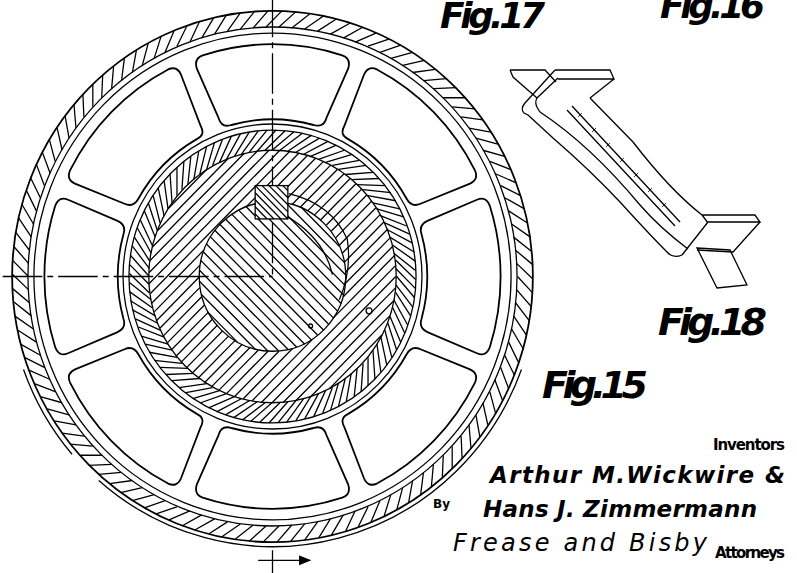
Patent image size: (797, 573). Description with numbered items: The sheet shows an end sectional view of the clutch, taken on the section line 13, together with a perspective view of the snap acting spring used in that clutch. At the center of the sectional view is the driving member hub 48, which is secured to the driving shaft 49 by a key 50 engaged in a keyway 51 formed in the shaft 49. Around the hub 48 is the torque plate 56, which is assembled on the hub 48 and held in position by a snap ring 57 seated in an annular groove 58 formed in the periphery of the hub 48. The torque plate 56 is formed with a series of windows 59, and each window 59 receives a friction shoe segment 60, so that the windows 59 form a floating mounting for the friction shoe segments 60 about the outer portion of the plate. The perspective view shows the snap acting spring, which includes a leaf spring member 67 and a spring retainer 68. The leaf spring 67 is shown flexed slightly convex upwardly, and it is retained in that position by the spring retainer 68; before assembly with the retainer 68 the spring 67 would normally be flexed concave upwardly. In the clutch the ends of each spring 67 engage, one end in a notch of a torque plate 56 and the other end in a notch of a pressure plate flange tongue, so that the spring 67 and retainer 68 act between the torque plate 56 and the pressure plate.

In FIG. 15, the section line 13 is at (296, 561).
In FIG. 15, the driving member hub 48 is at (367, 297).
In FIG. 15, the driving shaft 49 is at (312, 327).
In FIG. 15, the key 50 is at (288, 193).
In FIG. 15, the keyway 51 is at (298, 227).
In FIG. 15, the torque plate 56 is at (180, 61).
In FIG. 15, the snap ring 57 is at (404, 247).
In FIG. 15, the annular groove 58 is at (373, 312).
In FIG. 15, the window 59 is at (207, 82).
In FIG. 15, the friction shoe segment 60 is at (272, 276).
In FIG. 18, the leaf spring member 67 is at (630, 152).
In FIG. 18, the spring retainer 68 is at (618, 180).